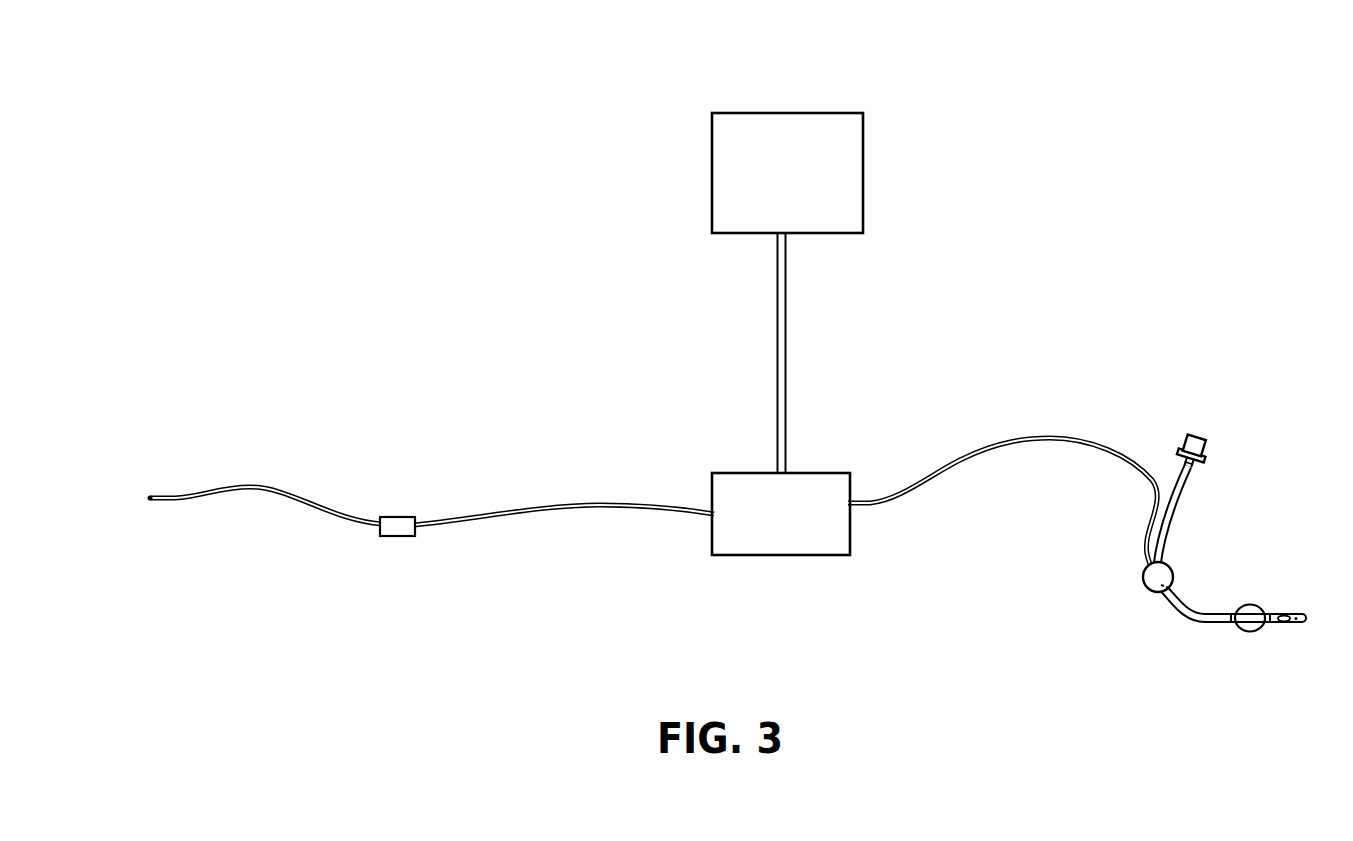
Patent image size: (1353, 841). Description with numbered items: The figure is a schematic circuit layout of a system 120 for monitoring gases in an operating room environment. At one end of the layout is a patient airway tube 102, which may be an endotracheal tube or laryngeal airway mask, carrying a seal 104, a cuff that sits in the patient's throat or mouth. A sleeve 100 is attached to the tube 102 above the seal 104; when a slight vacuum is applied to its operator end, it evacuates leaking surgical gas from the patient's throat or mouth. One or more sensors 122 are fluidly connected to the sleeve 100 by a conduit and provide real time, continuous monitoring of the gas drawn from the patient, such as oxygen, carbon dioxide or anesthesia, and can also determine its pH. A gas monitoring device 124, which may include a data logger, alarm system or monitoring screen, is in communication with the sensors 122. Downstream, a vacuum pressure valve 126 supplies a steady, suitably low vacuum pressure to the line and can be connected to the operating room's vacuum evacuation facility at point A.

The system 120 is at (393, 79).
The sensors 122 is at (834, 472).
The gas monitoring device 124 is at (842, 112).
The vacuum pressure valve 126 is at (403, 516).
The sleeve 100 is at (1193, 577).
The patient airway tube 102 is at (1190, 622).
The seal 104 is at (1256, 632).
The point A is at (150, 497).